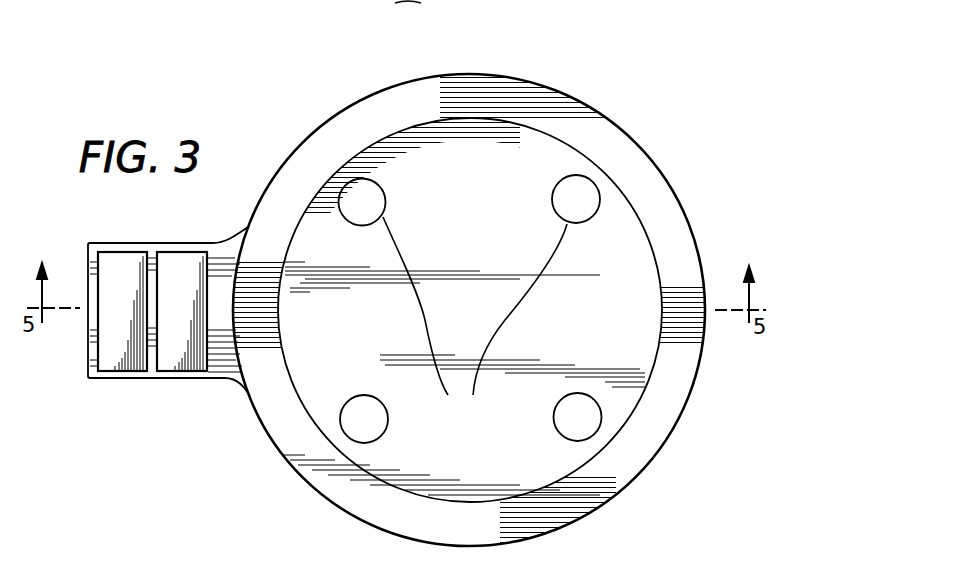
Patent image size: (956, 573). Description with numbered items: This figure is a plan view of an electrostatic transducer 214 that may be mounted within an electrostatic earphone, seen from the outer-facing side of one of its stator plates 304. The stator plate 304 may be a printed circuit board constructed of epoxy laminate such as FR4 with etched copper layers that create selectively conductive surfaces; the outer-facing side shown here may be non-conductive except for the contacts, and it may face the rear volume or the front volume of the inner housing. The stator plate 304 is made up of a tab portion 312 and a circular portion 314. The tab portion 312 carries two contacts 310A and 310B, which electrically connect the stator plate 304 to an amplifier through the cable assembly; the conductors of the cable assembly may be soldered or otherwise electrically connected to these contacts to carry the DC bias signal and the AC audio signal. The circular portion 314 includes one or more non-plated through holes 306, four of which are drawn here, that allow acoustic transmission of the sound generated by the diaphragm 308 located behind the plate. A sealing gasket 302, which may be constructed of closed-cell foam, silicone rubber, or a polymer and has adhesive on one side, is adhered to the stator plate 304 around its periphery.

The electrostatic transducer 214 is at (708, 69).
The sealing gasket 302 is at (249, 390).
The stator plate 304 is at (528, 152).
The non-plated through holes 306 is at (553, 417).
The diaphragm 308 is at (349, 191).
The contact 310A is at (125, 252).
The contact 310B is at (180, 252).
The tab portion 312 is at (104, 398).
The circular portion 314 is at (652, 236).